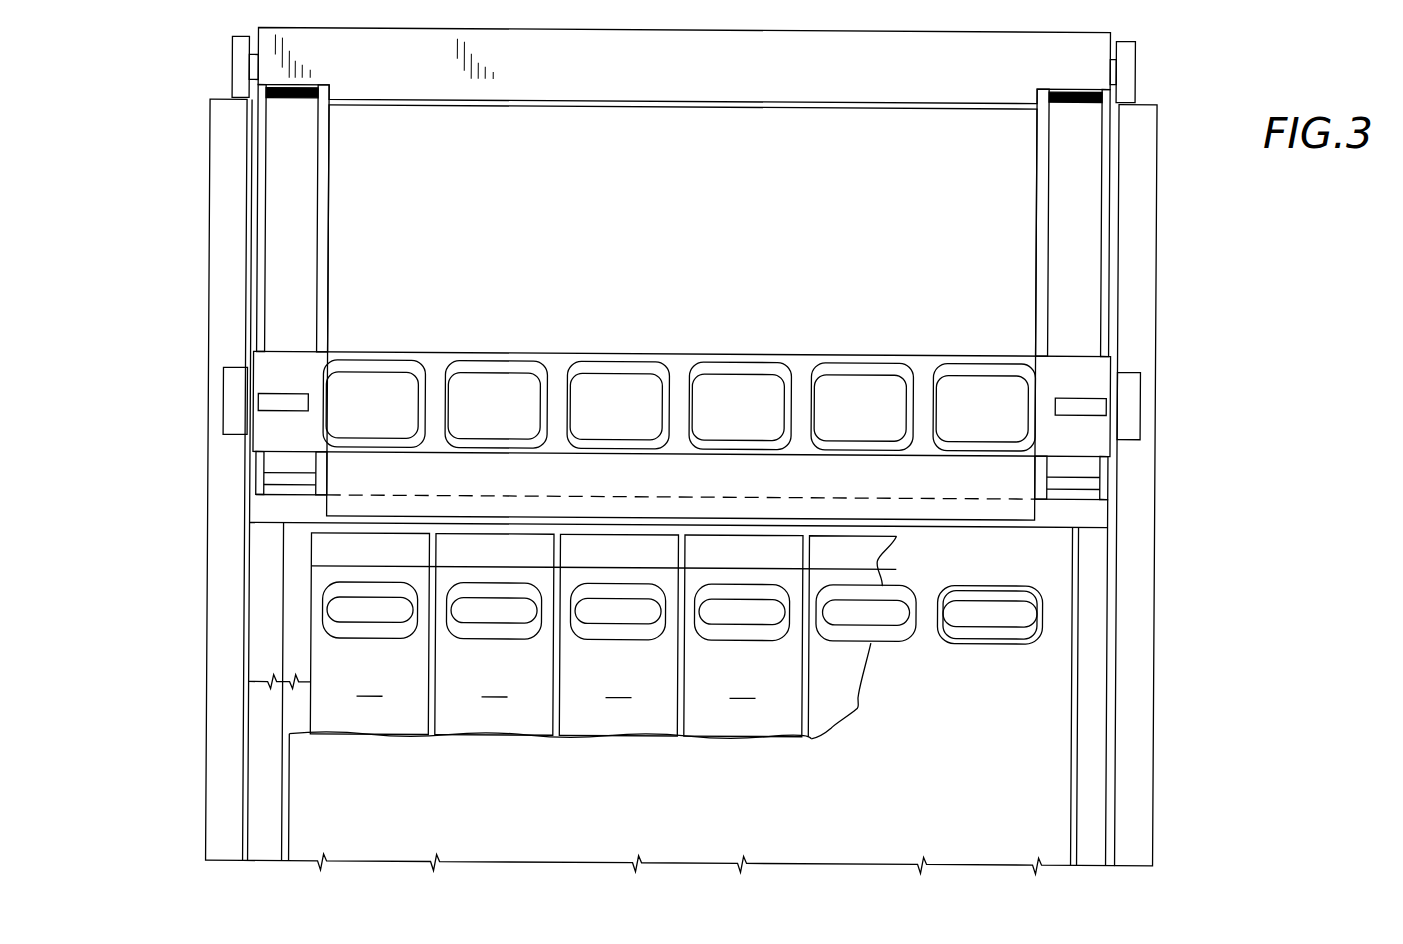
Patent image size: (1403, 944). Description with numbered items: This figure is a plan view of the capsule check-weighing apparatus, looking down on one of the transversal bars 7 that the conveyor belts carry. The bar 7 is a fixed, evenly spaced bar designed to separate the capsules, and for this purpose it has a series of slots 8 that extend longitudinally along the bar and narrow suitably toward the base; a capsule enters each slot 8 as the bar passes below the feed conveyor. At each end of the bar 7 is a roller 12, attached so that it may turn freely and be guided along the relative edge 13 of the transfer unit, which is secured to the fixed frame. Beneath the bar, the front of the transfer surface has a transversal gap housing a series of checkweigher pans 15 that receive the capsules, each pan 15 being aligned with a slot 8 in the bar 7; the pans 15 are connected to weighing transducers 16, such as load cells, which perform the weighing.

The transversal bar 7 is at (410, 107).
The slot 8 is at (337, 374).
The roller 12 is at (240, 73).
The edge of the transfer unit 13 is at (223, 632).
The checkweigher pan 15 is at (477, 583).
The weighing transducer 16 is at (603, 635).